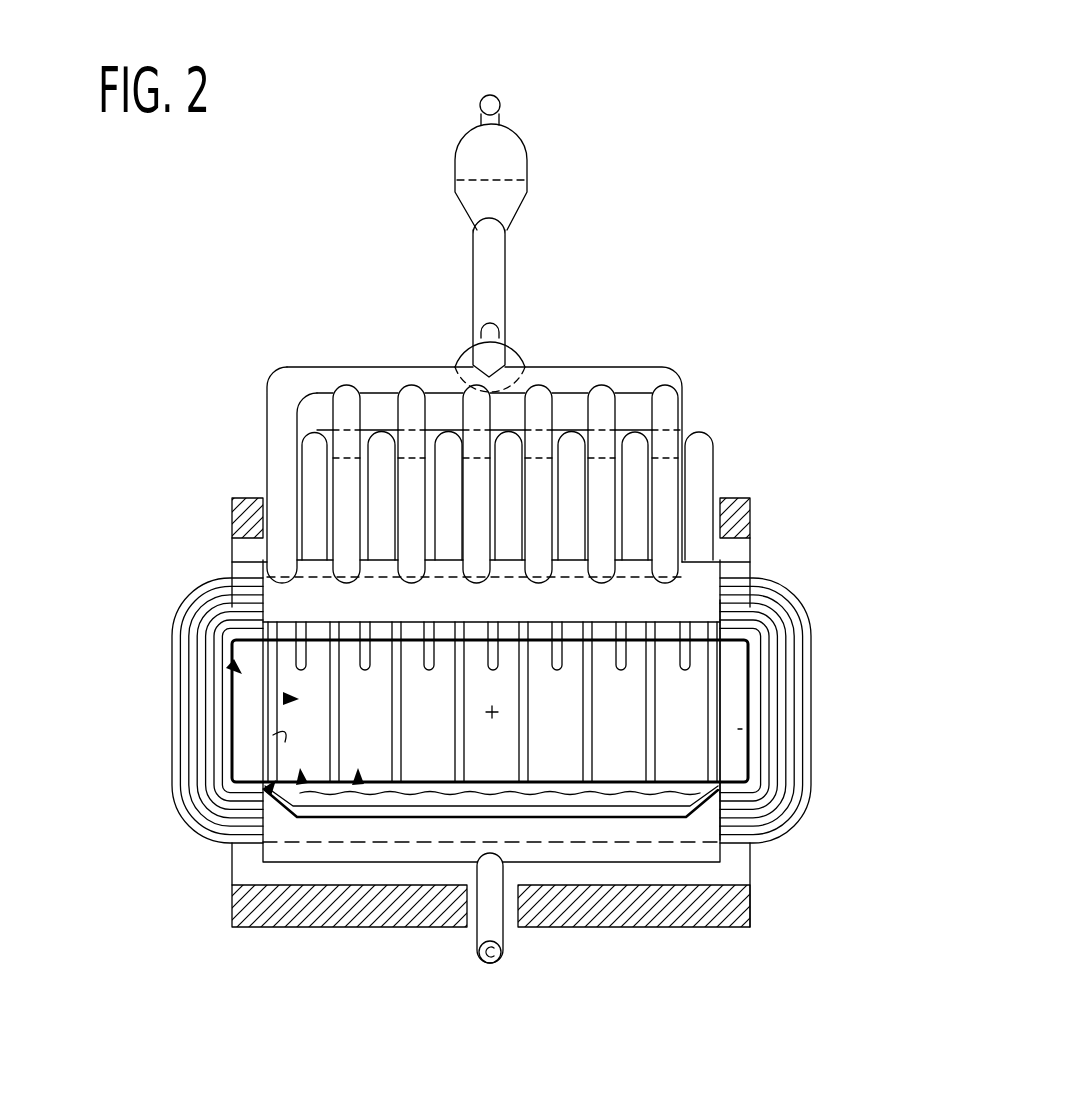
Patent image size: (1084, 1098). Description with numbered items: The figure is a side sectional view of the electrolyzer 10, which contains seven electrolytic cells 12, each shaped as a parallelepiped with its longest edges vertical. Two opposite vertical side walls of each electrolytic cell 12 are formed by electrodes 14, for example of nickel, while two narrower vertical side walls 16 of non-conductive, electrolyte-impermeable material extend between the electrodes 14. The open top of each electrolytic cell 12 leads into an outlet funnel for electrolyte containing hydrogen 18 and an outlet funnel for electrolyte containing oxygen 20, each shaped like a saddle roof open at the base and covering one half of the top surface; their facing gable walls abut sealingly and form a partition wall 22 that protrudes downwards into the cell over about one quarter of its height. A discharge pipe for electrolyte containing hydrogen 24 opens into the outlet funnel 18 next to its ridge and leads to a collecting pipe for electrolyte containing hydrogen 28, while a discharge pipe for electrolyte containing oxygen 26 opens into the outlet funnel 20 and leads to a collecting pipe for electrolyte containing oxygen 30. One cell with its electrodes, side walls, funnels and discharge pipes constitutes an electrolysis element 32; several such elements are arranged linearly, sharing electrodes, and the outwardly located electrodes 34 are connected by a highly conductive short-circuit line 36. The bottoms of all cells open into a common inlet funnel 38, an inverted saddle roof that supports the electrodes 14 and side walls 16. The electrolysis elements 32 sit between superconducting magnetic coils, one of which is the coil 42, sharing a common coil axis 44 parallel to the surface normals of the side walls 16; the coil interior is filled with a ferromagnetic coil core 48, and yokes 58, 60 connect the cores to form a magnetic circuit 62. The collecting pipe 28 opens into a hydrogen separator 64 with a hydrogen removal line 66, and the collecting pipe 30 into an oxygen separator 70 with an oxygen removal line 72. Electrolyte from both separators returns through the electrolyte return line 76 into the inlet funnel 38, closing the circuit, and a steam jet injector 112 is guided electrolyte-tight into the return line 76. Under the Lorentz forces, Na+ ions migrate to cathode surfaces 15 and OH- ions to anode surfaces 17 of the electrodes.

The electrolyzer 10 is at (180, 440).
The electrolytic cell 12 is at (270, 787).
The electrodes 14 is at (593, 765).
The cathode surfaces 15 is at (275, 735).
The side walls 16 is at (705, 707).
The anode surfaces 17 is at (303, 780).
The outlet funnel for electrolyte containing hydrogen 18 is at (620, 625).
The outlet funnel for electrolyte containing oxygen 20 is at (700, 673).
The partition wall 22 is at (270, 638).
The discharge pipe for electrolyte containing hydrogen 24 is at (335, 422).
The discharge pipe for electrolyte containing oxygen 26 is at (707, 480).
The collecting pipe for electrolyte containing hydrogen 28 is at (585, 369).
The collecting pipe for electrolyte containing oxygen 30 is at (632, 420).
The electrolysis element 32 is at (288, 698).
The outwardly located electrodes 34 is at (235, 763).
The short-circuit line 36 is at (528, 818).
The inlet funnel 38 is at (690, 845).
The superconducting magnetic coil 42 is at (822, 810).
The common coil axis 44 is at (492, 718).
The coil core 48 is at (738, 730).
The yoke 58 is at (235, 512).
The yoke 60 is at (663, 912).
The magnetic circuit 62 is at (235, 668).
The hydrogen separator 64 is at (540, 148).
The hydrogen removal line 66 is at (498, 96).
The oxygen separator 70 is at (512, 338).
The oxygen removal line 72 is at (478, 320).
The electrolyte return line 76 is at (490, 946).
The steam jet injector 112 is at (500, 962).